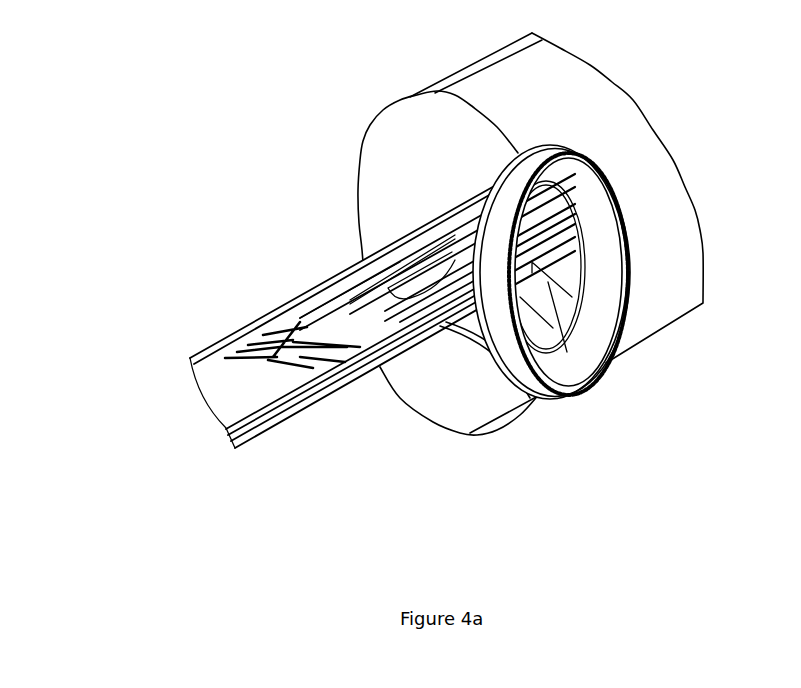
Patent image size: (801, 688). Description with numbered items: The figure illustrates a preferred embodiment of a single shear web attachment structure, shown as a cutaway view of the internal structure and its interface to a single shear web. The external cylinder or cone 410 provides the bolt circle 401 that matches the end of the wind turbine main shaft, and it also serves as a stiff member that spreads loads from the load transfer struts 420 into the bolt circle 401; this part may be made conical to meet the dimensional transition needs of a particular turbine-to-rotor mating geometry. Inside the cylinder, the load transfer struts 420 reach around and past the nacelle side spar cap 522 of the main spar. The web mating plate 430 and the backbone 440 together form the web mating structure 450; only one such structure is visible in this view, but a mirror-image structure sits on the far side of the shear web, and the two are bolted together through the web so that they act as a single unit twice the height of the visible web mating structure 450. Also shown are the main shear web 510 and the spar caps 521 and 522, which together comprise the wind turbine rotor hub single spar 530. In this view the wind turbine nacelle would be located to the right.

The bolt circle 401 is at (601, 392).
The external cylinder or cone 410 is at (516, 377).
The load transfer struts 420 is at (516, 281).
The web mating plate 430 is at (365, 325).
The backbone 440 is at (348, 305).
The web mating structure 450 is at (324, 260).
The main shear web 510 is at (284, 357).
The spar cap 521 is at (193, 359).
The nacelle side spar cap 522 is at (230, 438).
The wind turbine rotor hub single spar 530 is at (270, 452).